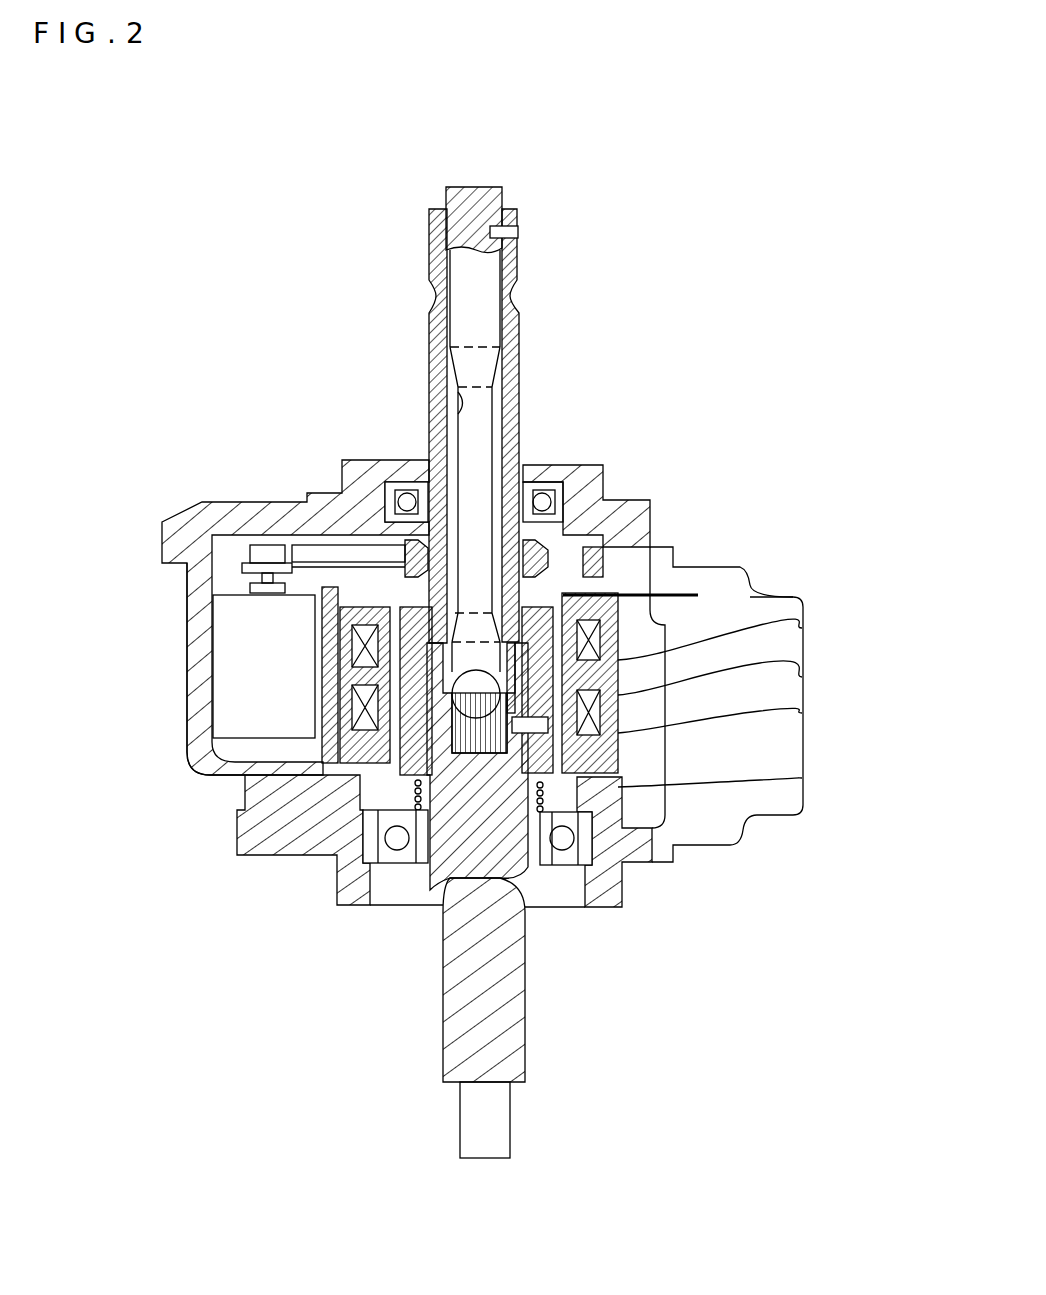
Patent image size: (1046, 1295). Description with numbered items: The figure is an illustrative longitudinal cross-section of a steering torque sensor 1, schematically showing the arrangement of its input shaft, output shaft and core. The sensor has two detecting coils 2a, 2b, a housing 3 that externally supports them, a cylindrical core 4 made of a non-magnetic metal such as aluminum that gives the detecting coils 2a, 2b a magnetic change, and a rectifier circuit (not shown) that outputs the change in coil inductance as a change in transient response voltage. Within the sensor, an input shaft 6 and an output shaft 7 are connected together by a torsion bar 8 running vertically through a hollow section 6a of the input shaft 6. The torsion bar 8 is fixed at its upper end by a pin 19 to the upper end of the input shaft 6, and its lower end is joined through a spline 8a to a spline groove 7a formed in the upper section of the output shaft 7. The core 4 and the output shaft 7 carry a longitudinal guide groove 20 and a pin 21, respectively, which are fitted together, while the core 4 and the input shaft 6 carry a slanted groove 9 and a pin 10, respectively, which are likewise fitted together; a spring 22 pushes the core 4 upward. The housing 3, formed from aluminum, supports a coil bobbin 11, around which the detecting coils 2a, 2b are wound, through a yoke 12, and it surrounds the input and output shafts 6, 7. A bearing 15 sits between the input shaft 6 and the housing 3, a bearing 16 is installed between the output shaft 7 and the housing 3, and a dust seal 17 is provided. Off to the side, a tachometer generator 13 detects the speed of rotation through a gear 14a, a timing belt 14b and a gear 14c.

The steering torque sensor 1 is at (642, 392).
The detecting coil 2a is at (803, 603).
The detecting coil 2b is at (802, 713).
The housing 3 is at (265, 832).
The cylindrical core 4 is at (350, 791).
The input shaft 6 is at (428, 326).
The hollow section 6a is at (447, 390).
The output shaft 7 is at (497, 1038).
The spline groove 7a is at (802, 778).
The torsion bar 8 is at (479, 418).
The spline 8a is at (468, 748).
The slanted groove 9 is at (430, 845).
The pin 10 is at (527, 868).
The coil bobbin 11 is at (618, 677).
The yoke 12 is at (620, 633).
The tachometer generator 13 is at (235, 660).
The gear 14a is at (389, 470).
The timing belt 14b is at (328, 556).
The gear 14c is at (268, 545).
The bearing 15 is at (565, 493).
The bearing 16 is at (625, 900).
The dust seal 17 is at (533, 466).
The pin 19 is at (518, 232).
The longitudinal guide groove 20 is at (802, 628).
The pin 21 is at (802, 677).
The spring 22 is at (387, 865).